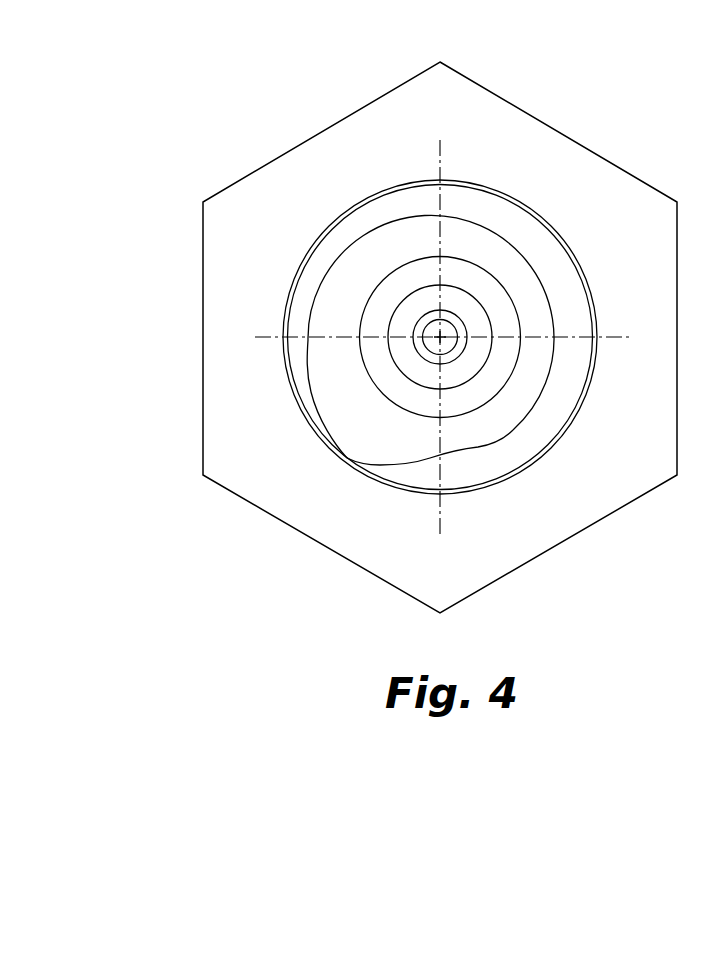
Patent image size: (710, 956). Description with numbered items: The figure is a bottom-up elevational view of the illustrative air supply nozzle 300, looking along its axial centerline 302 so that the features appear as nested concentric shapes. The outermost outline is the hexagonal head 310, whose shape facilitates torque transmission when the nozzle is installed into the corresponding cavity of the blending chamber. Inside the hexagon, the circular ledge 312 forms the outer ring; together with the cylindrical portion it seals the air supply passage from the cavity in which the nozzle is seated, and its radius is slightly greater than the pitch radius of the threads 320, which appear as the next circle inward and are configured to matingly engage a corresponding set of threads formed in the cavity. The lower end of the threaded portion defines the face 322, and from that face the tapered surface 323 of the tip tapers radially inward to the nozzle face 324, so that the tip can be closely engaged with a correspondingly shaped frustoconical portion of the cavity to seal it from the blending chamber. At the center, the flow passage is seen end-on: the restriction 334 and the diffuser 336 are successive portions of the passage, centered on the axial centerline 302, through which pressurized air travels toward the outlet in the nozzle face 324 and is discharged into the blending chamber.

The air supply nozzle 300 is at (233, 43).
The axial centerline 302 is at (442, 332).
The head 310 is at (203, 250).
The ledge 312 is at (456, 495).
The threads 320 is at (572, 383).
The face 322 is at (360, 422).
The tapered surface 323 is at (405, 288).
The nozzle face 324 is at (405, 323).
The restriction 334 is at (415, 343).
The diffuser 336 is at (430, 349).